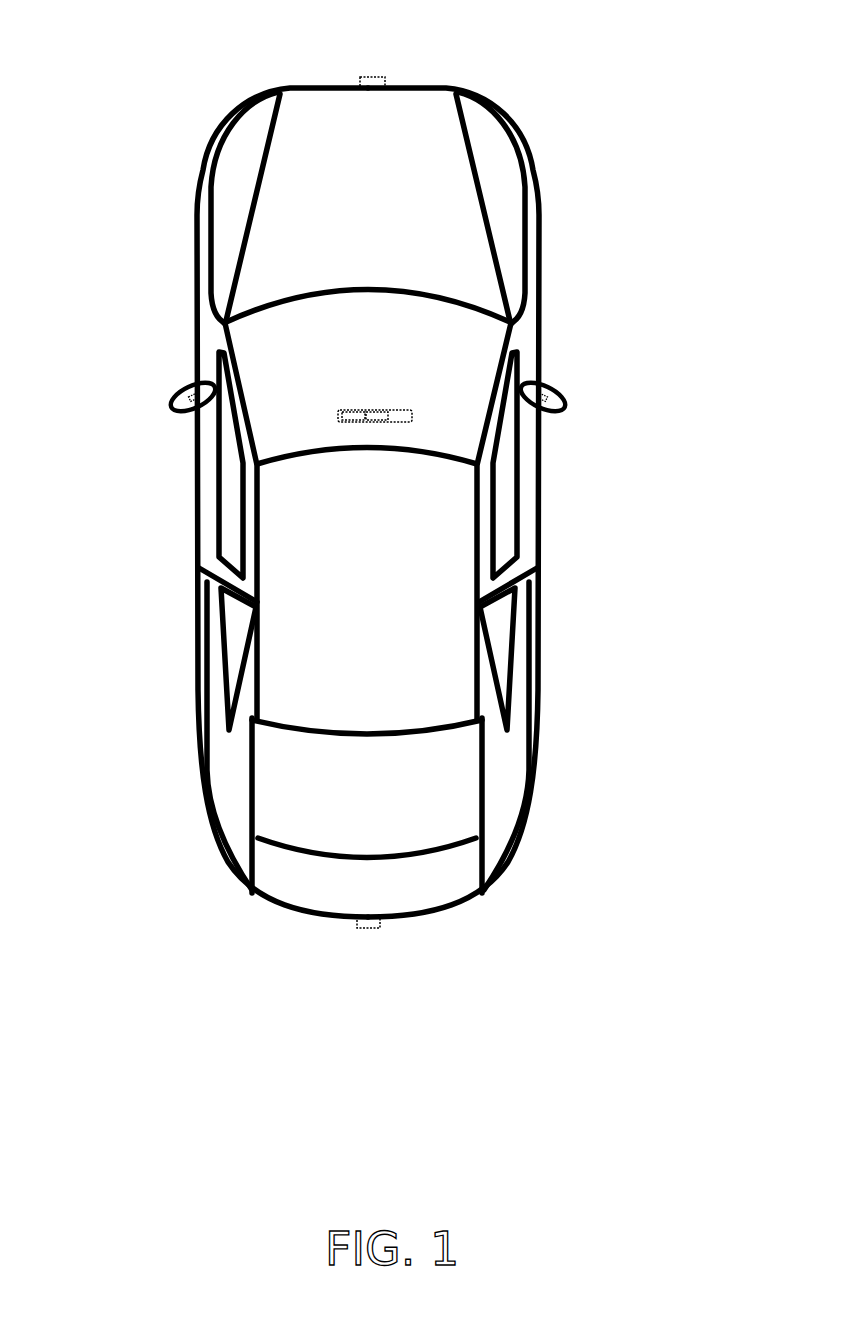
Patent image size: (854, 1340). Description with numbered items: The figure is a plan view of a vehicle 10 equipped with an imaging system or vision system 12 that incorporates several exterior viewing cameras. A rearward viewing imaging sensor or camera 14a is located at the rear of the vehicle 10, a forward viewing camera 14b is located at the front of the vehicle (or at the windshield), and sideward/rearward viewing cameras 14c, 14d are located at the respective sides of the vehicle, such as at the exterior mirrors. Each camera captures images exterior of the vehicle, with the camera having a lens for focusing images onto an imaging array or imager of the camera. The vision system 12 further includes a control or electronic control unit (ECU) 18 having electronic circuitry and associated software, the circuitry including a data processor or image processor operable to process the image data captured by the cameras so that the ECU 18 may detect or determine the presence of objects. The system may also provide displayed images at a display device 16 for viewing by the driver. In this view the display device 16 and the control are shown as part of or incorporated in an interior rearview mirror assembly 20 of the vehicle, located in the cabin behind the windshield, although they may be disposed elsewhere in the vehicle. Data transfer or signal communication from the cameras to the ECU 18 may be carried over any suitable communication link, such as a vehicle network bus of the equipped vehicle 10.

The vehicle 10 is at (133, 100).
The vision system 12 is at (330, 936).
The rearward viewing camera 14a is at (377, 928).
The forward viewing camera 14b is at (378, 77).
The sideward/rearward viewing camera 14c is at (178, 387).
The sideward/rearward viewing camera 14d is at (553, 387).
The display device 16 is at (350, 410).
The electronic control unit 18 is at (372, 412).
The interior rearview mirror assembly 20 is at (412, 410).